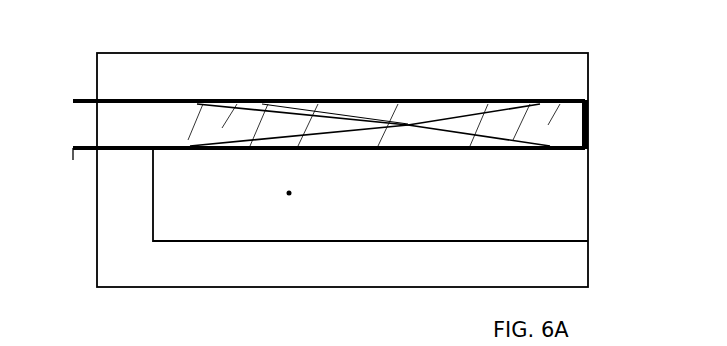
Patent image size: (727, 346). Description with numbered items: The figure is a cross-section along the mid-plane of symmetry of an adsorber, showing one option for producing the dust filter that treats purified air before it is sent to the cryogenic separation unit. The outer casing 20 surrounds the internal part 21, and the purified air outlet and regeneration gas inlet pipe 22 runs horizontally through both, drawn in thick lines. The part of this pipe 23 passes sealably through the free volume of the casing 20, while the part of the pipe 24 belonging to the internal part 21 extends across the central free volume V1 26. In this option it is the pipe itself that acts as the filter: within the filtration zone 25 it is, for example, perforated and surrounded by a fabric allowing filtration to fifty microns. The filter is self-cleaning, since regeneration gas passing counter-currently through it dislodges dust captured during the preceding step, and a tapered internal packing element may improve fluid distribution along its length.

The casing 20 is at (127, 53).
The internal part 21 is at (553, 241).
The purified air outlet and regeneration gas inlet pipe 22 is at (74, 150).
The part of the pipe passing sealably through the free volume of the casing 23 is at (130, 149).
The part of the pipe belonging to the internal part 24 is at (274, 99).
The filtration zone 25 is at (410, 124).
The free volume V1 26 is at (289, 193).